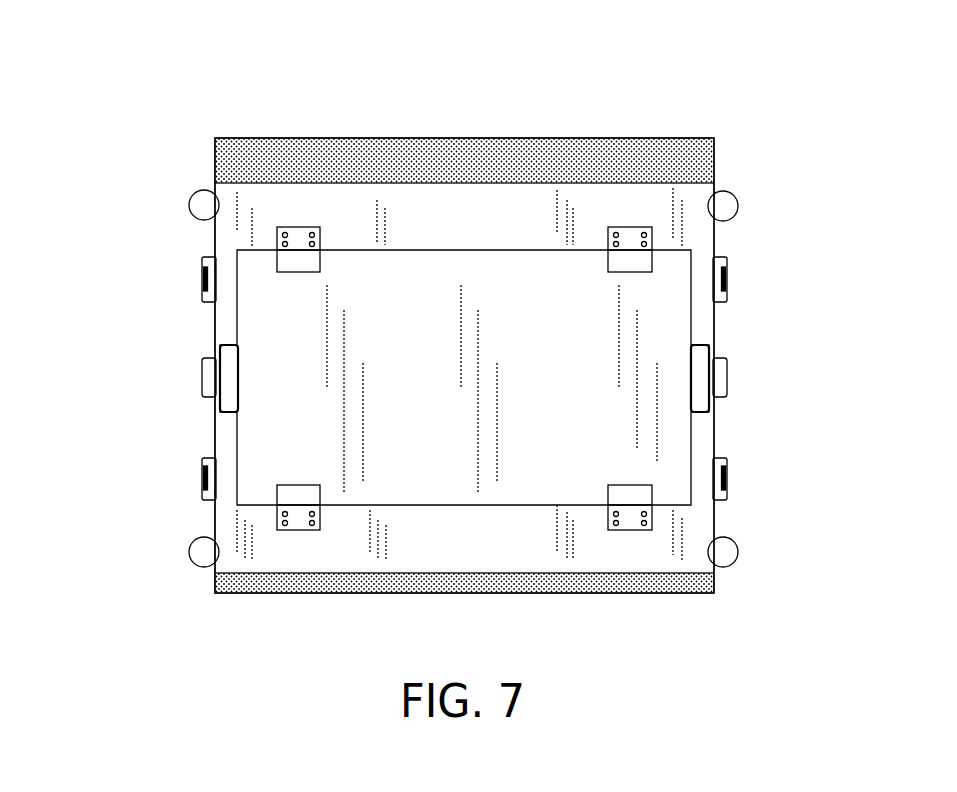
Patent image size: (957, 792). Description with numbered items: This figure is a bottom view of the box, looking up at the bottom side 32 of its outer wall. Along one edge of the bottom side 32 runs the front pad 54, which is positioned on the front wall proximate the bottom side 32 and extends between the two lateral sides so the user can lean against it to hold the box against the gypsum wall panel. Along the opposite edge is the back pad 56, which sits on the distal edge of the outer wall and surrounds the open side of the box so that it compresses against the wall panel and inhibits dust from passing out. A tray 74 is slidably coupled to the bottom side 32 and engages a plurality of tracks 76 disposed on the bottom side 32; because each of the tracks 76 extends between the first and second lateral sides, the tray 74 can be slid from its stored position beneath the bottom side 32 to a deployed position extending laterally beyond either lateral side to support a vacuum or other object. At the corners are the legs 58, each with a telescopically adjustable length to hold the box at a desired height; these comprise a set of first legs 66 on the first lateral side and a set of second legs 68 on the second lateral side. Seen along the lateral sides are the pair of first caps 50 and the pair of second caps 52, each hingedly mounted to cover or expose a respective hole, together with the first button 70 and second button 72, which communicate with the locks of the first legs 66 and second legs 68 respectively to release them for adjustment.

The bottom side 32 is at (542, 212).
The first caps 50 is at (202, 280).
The second caps 52 is at (727, 280).
The front pad 54 is at (673, 138).
The back pad 56 is at (660, 593).
The legs 58 is at (192, 194).
The first legs 66 is at (190, 178).
The second legs 68 is at (741, 176).
The first button 70 is at (202, 378).
The second button 72 is at (727, 378).
The tray 74 is at (393, 283).
The tracks 76 is at (304, 233).